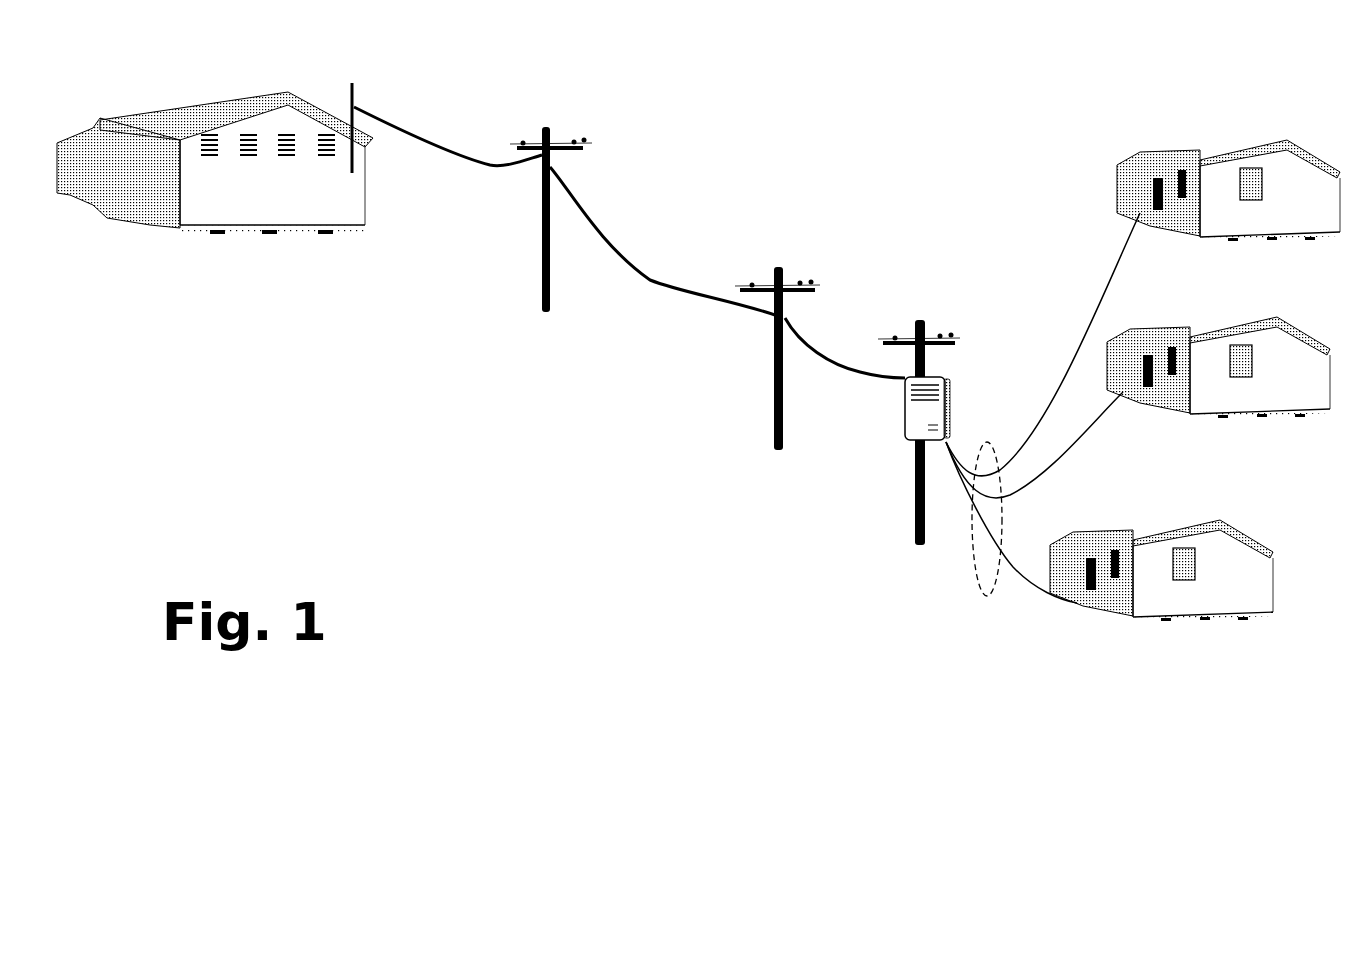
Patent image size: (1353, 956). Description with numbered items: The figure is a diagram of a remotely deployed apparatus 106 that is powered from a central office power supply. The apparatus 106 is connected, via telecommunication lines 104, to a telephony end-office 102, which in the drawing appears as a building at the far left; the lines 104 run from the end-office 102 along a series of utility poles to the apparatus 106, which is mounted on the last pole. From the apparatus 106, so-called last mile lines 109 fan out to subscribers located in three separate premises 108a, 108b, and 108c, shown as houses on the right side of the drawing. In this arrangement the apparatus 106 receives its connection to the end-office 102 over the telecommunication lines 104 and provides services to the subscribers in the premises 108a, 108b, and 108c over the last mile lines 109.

The telephony end-office 102 is at (253, 97).
The telecommunication lines 104 is at (448, 148).
The remotely deployed apparatus 106 is at (903, 430).
The premises 108a is at (1208, 143).
The premises 108b is at (1213, 318).
The premises 108c is at (1197, 518).
The last mile lines 109 is at (977, 583).